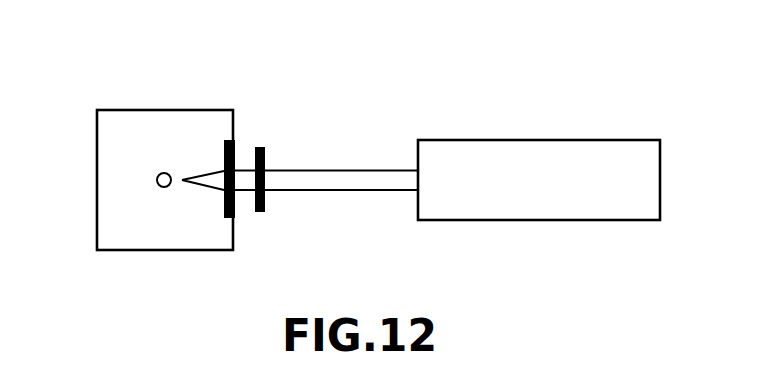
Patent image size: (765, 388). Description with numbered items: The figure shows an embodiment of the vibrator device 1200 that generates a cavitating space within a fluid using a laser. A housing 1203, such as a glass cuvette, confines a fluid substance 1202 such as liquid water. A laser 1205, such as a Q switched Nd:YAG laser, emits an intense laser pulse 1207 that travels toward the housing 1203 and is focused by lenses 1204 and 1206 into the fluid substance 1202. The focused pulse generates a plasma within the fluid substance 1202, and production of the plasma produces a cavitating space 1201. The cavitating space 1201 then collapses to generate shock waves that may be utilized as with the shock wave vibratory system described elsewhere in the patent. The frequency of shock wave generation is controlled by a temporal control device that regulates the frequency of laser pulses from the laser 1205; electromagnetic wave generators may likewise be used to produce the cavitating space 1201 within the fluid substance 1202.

The vibrator device 1200 is at (428, 82).
The cavitating space 1201 is at (156, 179).
The fluid substance 1202 is at (188, 242).
The housing 1203 is at (123, 110).
The lens 1204 is at (237, 213).
The laser 1205 is at (567, 140).
The lens 1206 is at (265, 200).
The laser pulse 1207 is at (323, 177).